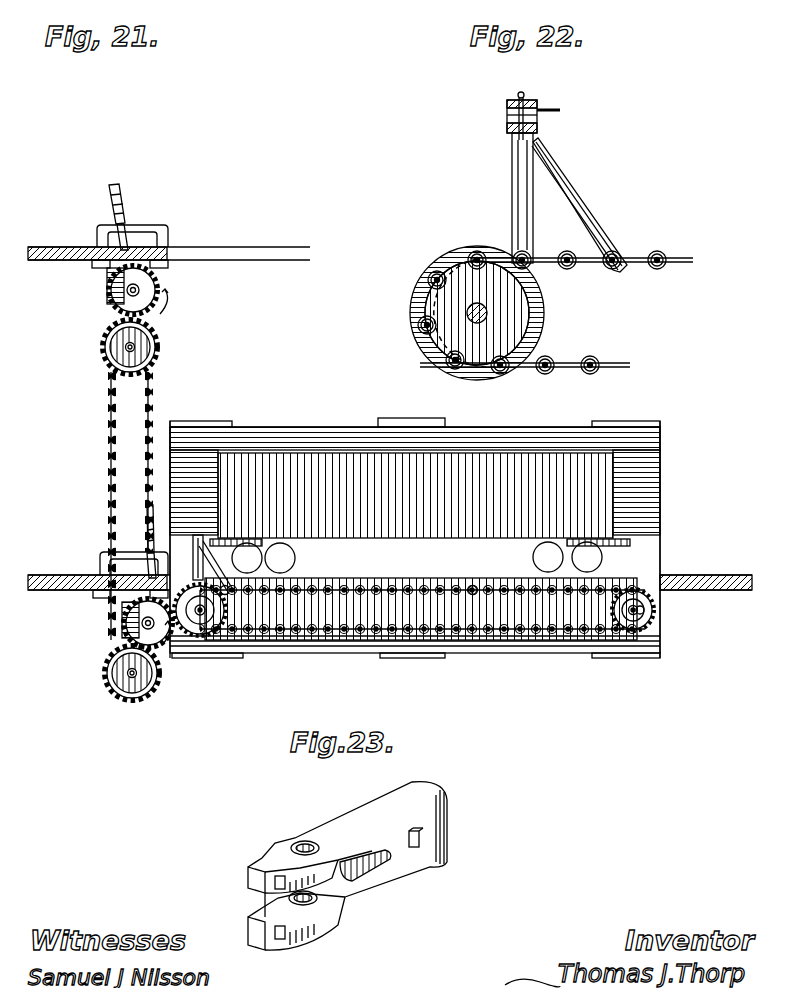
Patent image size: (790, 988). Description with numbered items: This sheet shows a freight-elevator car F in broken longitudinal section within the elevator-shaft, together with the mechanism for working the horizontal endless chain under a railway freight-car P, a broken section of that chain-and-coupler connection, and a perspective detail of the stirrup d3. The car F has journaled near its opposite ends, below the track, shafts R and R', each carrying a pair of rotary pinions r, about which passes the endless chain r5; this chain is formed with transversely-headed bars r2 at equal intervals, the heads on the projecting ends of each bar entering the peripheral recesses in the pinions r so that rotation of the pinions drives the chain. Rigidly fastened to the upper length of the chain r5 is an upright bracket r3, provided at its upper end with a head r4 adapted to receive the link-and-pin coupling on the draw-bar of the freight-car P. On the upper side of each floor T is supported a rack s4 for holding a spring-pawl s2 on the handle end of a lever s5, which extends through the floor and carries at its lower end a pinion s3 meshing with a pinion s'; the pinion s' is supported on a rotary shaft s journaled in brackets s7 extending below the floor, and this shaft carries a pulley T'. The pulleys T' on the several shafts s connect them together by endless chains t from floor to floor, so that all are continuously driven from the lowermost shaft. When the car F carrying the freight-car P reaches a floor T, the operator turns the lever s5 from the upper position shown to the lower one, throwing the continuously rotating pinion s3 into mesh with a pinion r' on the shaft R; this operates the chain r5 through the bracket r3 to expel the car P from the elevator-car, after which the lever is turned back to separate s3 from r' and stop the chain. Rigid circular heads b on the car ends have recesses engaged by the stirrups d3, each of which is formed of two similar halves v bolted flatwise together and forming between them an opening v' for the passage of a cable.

In FIG. 21, the pulley T' is at (165, 509).
In FIG. 21, the floor T is at (390, 599).
In FIG. 21, the rack s4 is at (97, 236).
In FIG. 21, the spring-pawl s2 is at (125, 205).
In FIG. 21, the lever s5 is at (125, 238).
In FIG. 21, the brackets s7 is at (107, 264).
In FIG. 21, the pinion s3 is at (160, 289).
In FIG. 21, the pinion s' is at (106, 535).
In FIG. 21, the rotary shaft s is at (95, 534).
In FIG. 21, the endless chains t is at (107, 412).
In FIG. 21, the freight-elevator car F is at (276, 426).
In FIG. 21, the circular heads b is at (192, 421).
In FIG. 21, the freight-car P is at (415, 495).
In FIG. 21, the toothed bar h' is at (462, 504).
In FIG. 21, the stirrup halves v is at (443, 557).
In FIG. 23, the stirrup halves v is at (338, 869).
In FIG. 21, the upright bracket r3 is at (196, 568).
In FIG. 22, the upright bracket r3 is at (570, 188).
In FIG. 21, the shaft R is at (200, 639).
In FIG. 22, the shaft R is at (465, 314).
In FIG. 21, the shaft R' is at (629, 642).
In FIG. 21, the pinion r' is at (190, 658).
In FIG. 21, the transversely-headed bars r2 is at (405, 655).
In FIG. 22, the transversely-headed bars r2 is at (691, 262).
In FIG. 21, the endless chain r5 is at (473, 585).
In FIG. 21, the rotary pinions r is at (457, 606).
In FIG. 22, the rotary pinions r is at (500, 312).
In FIG. 22, the head r4 is at (500, 118).
In FIG. 23, the stirrup d3 is at (447, 801).
In FIG. 23, the opening v' is at (292, 856).